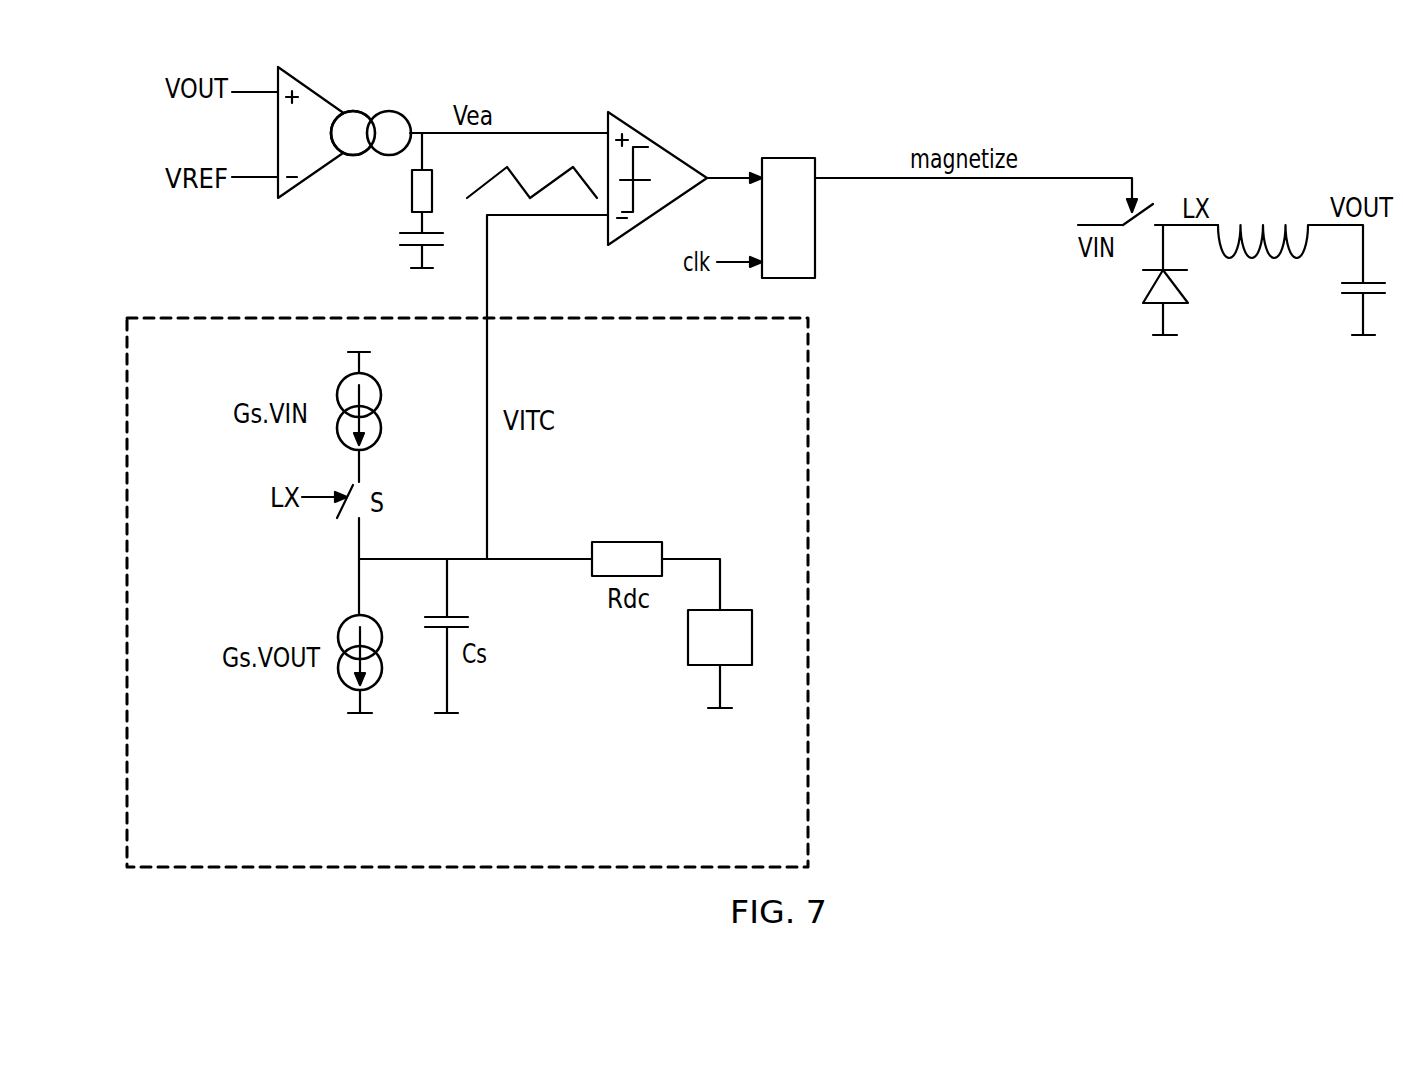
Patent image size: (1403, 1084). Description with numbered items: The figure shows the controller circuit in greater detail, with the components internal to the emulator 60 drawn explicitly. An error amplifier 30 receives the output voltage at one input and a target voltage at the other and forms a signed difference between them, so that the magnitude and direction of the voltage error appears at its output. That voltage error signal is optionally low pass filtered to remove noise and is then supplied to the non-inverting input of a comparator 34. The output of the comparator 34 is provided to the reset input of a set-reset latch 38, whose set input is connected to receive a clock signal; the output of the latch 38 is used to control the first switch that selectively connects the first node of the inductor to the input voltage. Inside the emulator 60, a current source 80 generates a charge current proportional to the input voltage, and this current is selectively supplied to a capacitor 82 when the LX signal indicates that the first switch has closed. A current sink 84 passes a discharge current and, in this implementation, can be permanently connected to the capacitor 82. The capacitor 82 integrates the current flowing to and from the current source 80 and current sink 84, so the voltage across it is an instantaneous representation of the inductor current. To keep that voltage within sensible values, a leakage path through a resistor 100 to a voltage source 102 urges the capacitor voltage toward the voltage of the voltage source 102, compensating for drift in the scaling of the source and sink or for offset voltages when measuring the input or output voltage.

The error amplifier 30 is at (322, 83).
The comparator 34 is at (640, 130).
The set-reset latch 38 is at (790, 158).
The emulator 60 is at (810, 428).
The current source 80 is at (382, 395).
The capacitor 82 is at (472, 618).
The current sink 84 is at (342, 685).
The resistor 100 is at (628, 542).
The voltage source 102 is at (760, 588).